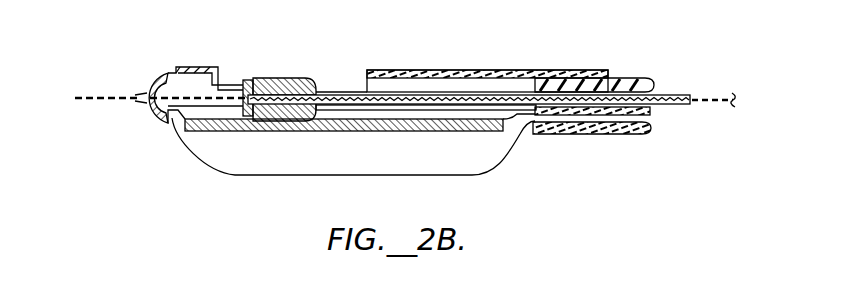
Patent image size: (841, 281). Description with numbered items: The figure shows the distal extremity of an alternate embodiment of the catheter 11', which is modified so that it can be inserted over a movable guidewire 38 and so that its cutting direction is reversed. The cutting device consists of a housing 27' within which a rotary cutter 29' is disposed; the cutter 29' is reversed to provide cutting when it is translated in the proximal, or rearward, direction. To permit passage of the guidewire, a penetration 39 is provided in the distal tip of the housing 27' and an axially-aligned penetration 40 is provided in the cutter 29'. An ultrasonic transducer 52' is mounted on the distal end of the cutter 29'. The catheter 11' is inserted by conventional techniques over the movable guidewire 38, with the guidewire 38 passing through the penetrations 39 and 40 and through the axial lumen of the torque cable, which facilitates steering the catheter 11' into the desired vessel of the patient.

The movable guidewire 38 is at (92, 92).
The penetration 39 is at (132, 101).
The axially-aligned penetration 40 is at (241, 92).
The ultrasonic transducer 52' is at (288, 73).
The cutter 29' is at (491, 68).
The housing 27' is at (487, 59).
The catheter 11' is at (645, 68).